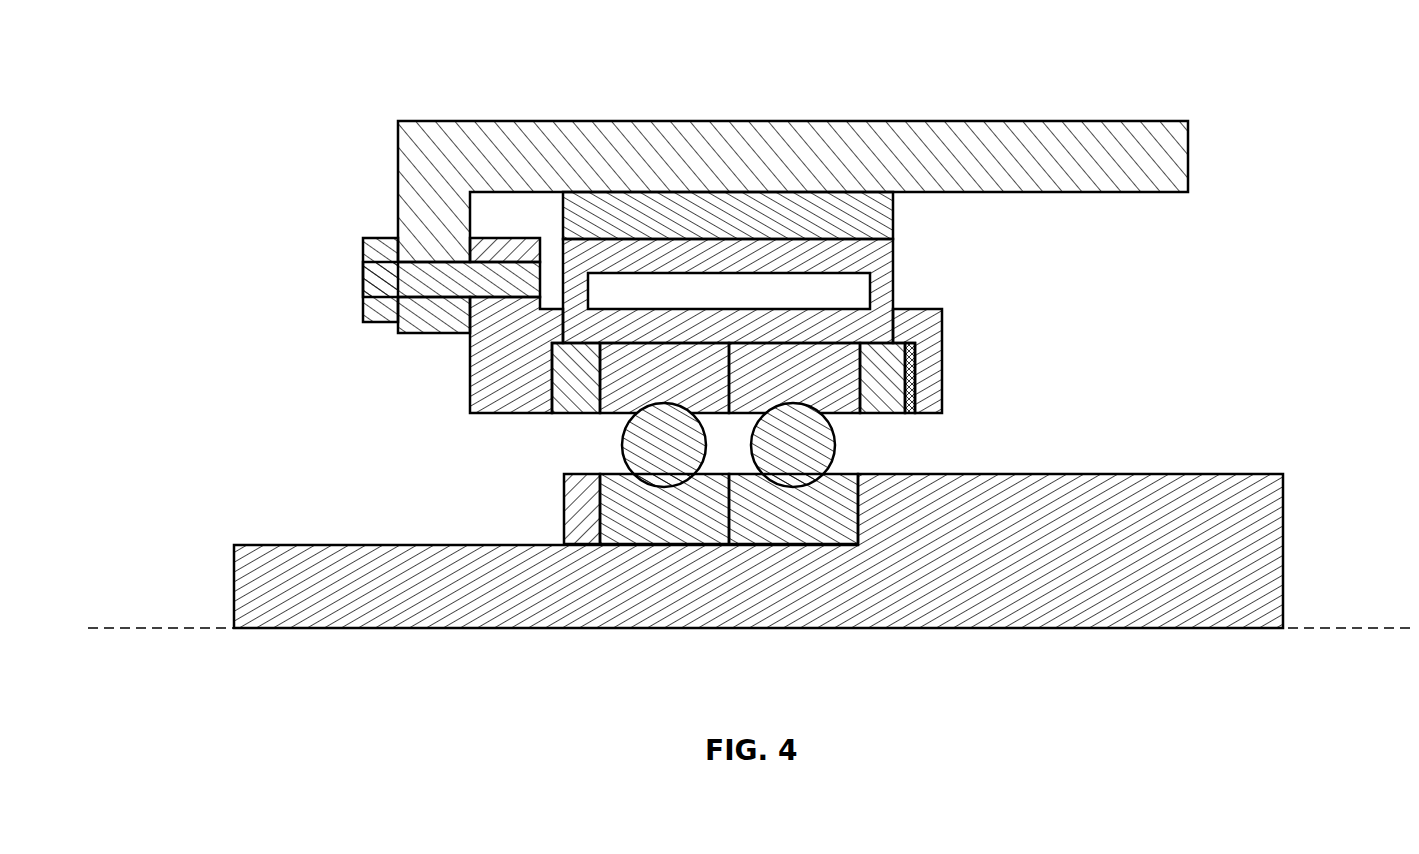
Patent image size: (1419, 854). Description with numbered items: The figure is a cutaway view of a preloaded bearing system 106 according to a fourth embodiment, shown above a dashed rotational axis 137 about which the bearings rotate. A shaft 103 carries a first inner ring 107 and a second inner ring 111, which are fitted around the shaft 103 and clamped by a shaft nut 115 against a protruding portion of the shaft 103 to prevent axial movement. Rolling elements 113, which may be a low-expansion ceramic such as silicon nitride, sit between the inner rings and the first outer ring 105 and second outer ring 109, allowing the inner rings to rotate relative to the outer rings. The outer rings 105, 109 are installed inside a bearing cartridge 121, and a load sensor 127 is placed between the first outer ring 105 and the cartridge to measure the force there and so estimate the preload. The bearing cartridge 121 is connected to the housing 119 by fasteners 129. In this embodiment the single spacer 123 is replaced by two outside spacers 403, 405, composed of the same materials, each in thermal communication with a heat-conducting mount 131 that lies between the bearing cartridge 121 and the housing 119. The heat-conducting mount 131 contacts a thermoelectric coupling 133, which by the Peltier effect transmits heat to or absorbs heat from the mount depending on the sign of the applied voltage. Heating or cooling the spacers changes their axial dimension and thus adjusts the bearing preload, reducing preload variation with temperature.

The preloaded bearing system 106 is at (272, 64).
The housing 119 is at (1176, 167).
The thermoelectric coupling (TEC) 133 is at (703, 212).
The heat-conducting mount 131 is at (894, 254).
The fasteners 129 is at (362, 305).
The bearing cartridge 121 is at (930, 322).
The outside spacer 403 is at (568, 388).
The spacer 123 is at (633, 360).
The first outer ring 105 is at (780, 360).
The outside spacer 405 is at (888, 364).
The load sensor 127 is at (915, 400).
The second outer ring 109 is at (632, 405).
The rolling elements 113 is at (632, 453).
The shaft nut 115 is at (572, 531).
The second inner ring 111 is at (616, 496).
The first inner ring 107 is at (842, 478).
The shaft 103 is at (1218, 490).
The rotational axis 137 is at (162, 628).